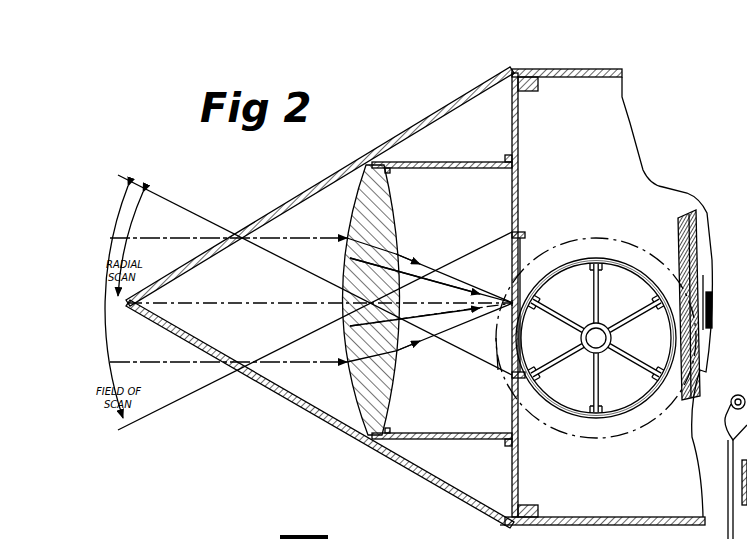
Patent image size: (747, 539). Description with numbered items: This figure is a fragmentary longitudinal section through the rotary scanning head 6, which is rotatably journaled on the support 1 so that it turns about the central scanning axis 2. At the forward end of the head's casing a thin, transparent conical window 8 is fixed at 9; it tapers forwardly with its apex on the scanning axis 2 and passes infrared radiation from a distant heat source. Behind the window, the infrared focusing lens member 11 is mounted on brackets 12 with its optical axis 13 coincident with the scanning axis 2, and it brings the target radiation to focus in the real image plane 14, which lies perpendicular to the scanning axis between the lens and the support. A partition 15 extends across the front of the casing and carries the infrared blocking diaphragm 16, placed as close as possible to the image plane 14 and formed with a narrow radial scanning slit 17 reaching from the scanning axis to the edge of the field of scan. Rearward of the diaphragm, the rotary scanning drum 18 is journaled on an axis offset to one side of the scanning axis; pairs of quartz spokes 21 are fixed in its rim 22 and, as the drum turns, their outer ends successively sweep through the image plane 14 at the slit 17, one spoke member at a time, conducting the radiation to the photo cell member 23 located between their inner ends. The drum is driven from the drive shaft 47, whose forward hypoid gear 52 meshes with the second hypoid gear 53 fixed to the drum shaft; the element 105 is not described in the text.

The support 1 is at (608, 528).
The scanning axis 2 is at (320, 295).
The rotary scanning head 6 is at (564, 67).
The transparent conical nose or infrared radiation passing window 8 is at (306, 418).
The forward end fixing location of the window 9 is at (522, 526).
The infrared radiation focusing lens member 11 is at (388, 392).
The brackets 12 is at (440, 438).
The optical axis 13 is at (447, 300).
The real image focusing plane 14 is at (522, 242).
The partition 15 is at (512, 213).
The infrared radiation blocking diaphragm 16 is at (496, 372).
The radial scanning slot or slit 17 is at (512, 332).
The rotary scanning drum 18 is at (572, 392).
The infrared radiation transmitting spokes 21 is at (592, 366).
The rim 22 is at (612, 412).
The photo cell member 23 is at (598, 332).
The drive shaft 47 is at (712, 305).
The hypoid gear 52 is at (698, 256).
The second hypoid gear 53 is at (645, 255).
The lever rod 105 is at (728, 466).